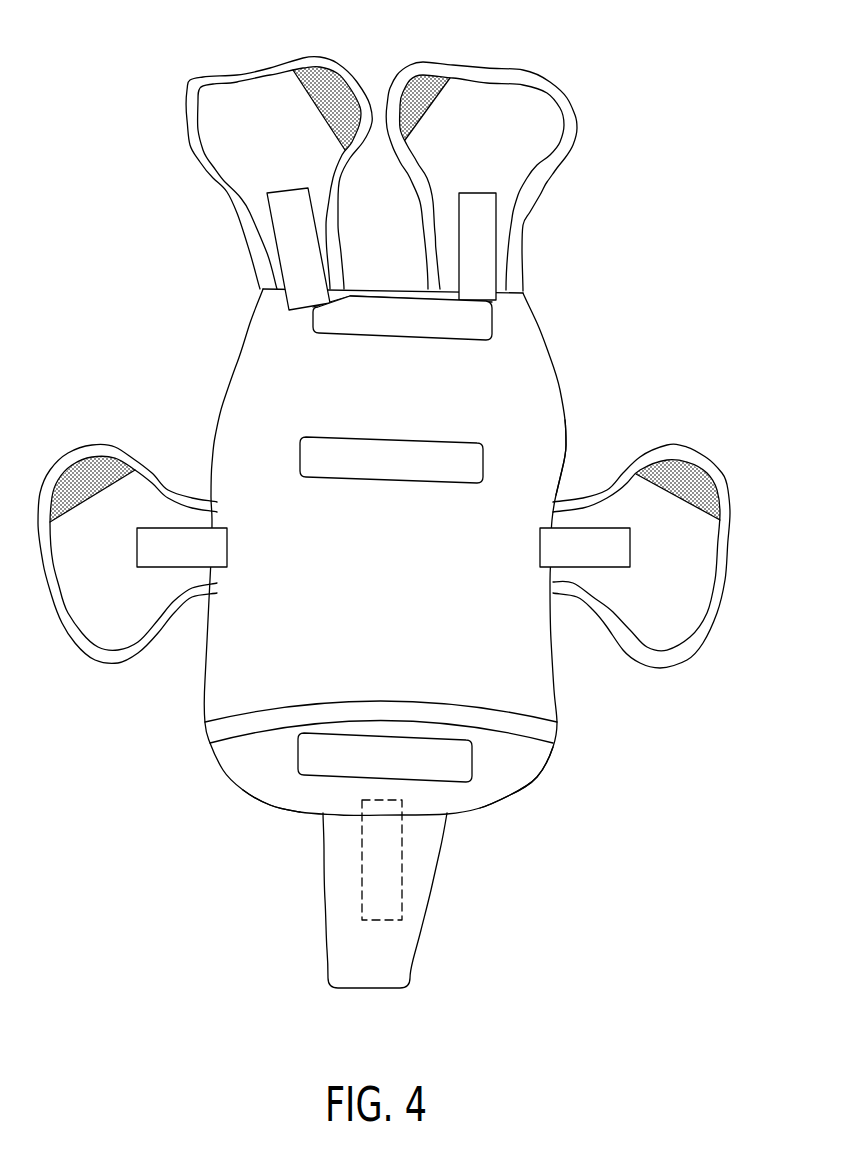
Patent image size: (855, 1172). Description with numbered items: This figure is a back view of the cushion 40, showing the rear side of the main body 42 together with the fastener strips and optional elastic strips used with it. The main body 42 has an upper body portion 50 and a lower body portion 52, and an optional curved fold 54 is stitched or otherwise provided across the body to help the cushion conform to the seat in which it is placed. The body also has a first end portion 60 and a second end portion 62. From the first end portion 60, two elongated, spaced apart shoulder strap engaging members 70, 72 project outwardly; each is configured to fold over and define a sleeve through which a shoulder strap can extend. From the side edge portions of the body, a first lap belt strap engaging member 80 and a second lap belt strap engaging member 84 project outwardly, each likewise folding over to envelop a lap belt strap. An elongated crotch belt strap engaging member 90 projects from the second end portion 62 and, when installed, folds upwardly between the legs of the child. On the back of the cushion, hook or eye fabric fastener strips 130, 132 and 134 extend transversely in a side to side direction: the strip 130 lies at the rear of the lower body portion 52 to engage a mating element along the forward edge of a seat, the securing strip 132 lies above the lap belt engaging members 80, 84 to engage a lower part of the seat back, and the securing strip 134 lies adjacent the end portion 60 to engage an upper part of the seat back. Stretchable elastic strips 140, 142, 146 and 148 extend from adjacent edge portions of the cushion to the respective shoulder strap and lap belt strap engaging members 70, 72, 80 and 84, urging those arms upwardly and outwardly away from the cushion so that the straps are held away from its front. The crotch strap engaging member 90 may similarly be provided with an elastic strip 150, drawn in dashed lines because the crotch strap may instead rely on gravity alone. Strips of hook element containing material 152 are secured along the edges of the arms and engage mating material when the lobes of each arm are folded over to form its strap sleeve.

The cushion 40 is at (404, 502).
The main body 42 is at (534, 415).
The upper body portion 50 is at (543, 456).
The lower body portion 52 is at (507, 783).
The curved fold 54 is at (533, 730).
The first end portion 60 is at (373, 287).
The second end portion 62 is at (300, 815).
The shoulder strap engaging member 70 is at (553, 122).
The shoulder strap engaging member 72 is at (220, 168).
The lap belt strap engaging member 80 is at (717, 482).
The lap belt strap engaging member 84 is at (88, 657).
The crotch belt strap engaging member 90 is at (402, 950).
The fastener strip 130 is at (313, 748).
The securing strip 132 is at (335, 443).
The securing strip 134 is at (345, 318).
The elastic strip 140 is at (483, 250).
The elastic strip 142 is at (287, 237).
The elastic strip 146 is at (557, 542).
The elastic strip 148 is at (167, 540).
The elastic strip 150 is at (387, 870).
The strip of hook element containing material 152 is at (338, 87).